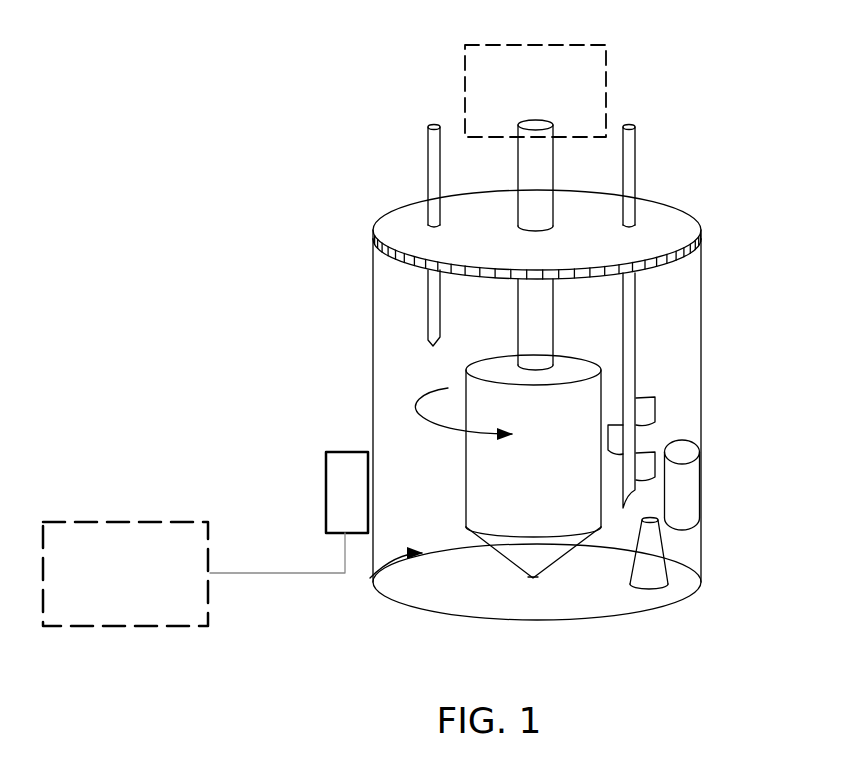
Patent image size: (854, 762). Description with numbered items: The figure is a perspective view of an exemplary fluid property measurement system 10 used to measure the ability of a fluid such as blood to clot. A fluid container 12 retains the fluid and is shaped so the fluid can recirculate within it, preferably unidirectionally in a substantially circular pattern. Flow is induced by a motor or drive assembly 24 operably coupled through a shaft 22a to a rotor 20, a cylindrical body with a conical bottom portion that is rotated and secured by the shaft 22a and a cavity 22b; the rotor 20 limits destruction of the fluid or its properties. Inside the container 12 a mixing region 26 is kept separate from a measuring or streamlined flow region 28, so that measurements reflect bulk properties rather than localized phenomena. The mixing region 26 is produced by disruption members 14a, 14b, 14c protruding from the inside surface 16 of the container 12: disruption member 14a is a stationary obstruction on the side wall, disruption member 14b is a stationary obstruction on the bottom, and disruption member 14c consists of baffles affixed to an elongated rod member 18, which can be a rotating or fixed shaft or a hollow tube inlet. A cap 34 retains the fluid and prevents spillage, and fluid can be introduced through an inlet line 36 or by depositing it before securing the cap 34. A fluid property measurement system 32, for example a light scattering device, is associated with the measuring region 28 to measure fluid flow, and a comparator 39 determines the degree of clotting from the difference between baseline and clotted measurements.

The system 10 is at (278, 134).
The fluid container 12 is at (373, 353).
The disruption member 14a is at (682, 487).
The disruption member 14b is at (652, 562).
The disruption member 14c is at (647, 417).
The inside surface 16 is at (380, 533).
The rod member 18 is at (630, 172).
The rotor 20 is at (508, 466).
The shaft 22a is at (537, 172).
The cavity 22b is at (535, 578).
The motor or drive assembly 24 is at (606, 95).
The mixing region 26 is at (677, 390).
The measuring region 28 is at (396, 470).
The fluid property measurement system 32 is at (345, 492).
The cap 34 is at (403, 227).
The inlet line 36 is at (432, 167).
The comparator 39 is at (128, 626).